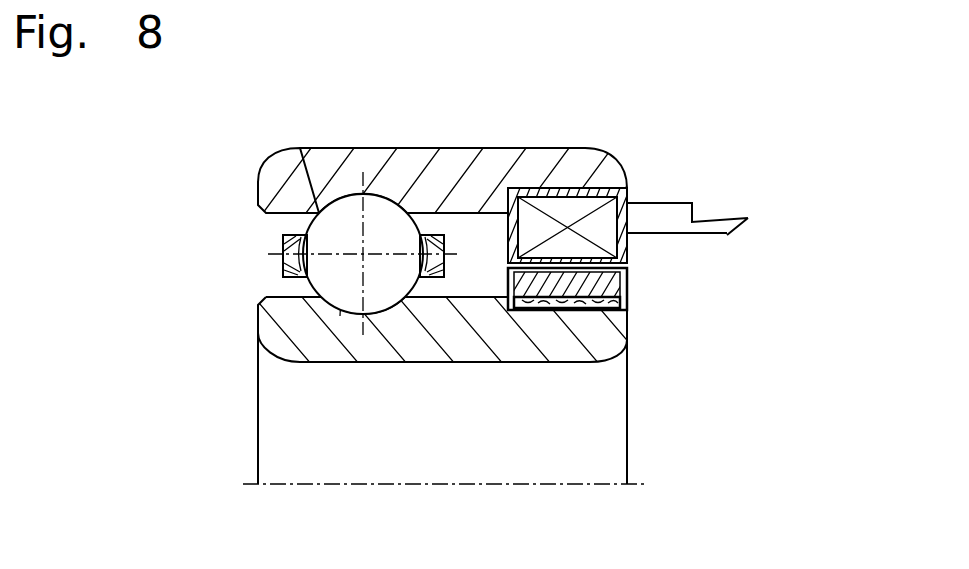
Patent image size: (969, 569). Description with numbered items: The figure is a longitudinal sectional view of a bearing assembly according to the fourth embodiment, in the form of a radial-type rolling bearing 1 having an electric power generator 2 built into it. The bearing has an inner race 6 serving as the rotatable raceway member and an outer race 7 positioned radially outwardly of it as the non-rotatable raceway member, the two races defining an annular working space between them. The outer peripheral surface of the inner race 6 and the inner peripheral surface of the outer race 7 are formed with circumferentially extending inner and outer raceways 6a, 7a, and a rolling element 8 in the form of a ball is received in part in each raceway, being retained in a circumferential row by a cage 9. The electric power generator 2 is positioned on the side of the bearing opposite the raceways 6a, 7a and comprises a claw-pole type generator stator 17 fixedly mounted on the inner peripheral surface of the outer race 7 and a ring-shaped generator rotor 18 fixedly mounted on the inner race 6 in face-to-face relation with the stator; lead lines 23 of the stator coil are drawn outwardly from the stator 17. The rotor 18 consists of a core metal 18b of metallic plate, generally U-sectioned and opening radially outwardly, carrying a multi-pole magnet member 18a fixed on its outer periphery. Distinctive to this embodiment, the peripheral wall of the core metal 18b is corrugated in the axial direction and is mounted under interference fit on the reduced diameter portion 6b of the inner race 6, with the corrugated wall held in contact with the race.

The rolling bearing 1 is at (514, 139).
The electric power generator 2 is at (828, 187).
The inner race 6 is at (266, 333).
The inner raceway 6a is at (350, 303).
The reduced diameter portion 6b is at (578, 320).
The outer race 7 is at (272, 168).
The outer raceway 7a is at (396, 205).
The rolling element 8 is at (333, 215).
The cage 9 is at (283, 249).
The generator stator 17 is at (628, 195).
The generator rotor 18 is at (630, 287).
The multi-pole magnet member 18a is at (540, 283).
The core metal 18b is at (545, 290).
The lead lines 23 is at (660, 222).